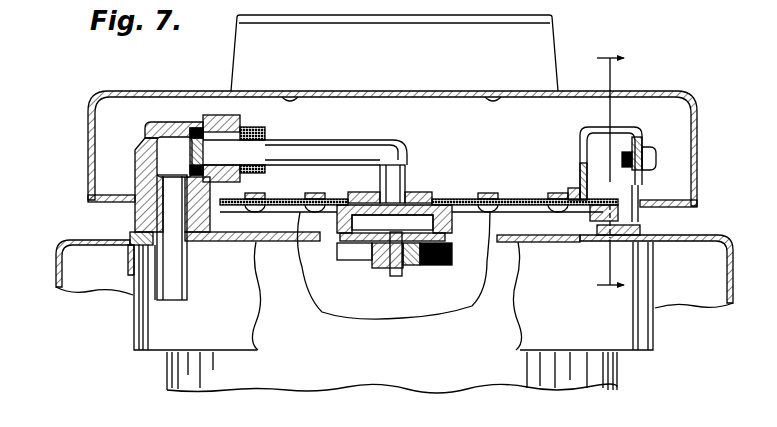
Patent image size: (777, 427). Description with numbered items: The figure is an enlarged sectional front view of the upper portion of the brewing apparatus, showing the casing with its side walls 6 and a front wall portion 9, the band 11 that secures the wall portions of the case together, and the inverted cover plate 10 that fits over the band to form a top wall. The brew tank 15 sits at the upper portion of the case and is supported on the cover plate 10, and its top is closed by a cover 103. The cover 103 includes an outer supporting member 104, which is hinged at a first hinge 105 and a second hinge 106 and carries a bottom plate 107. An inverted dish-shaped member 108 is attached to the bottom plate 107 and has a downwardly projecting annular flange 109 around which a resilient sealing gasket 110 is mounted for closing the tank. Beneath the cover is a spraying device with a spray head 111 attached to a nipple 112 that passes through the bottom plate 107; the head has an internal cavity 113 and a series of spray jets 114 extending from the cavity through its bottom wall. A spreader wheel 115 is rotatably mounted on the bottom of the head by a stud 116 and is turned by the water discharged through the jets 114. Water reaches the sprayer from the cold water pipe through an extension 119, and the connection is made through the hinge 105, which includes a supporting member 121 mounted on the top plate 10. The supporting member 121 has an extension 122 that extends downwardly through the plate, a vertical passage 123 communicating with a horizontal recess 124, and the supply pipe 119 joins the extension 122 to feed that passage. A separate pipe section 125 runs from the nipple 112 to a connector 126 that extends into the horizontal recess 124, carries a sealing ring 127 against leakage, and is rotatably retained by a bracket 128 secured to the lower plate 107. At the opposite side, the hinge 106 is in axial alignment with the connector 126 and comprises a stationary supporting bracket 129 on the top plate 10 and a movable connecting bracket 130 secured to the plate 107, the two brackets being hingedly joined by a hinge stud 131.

The side walls 6 is at (56, 280).
The front wall portion 9 is at (602, 171).
The inverted cover plate 10 is at (130, 266).
The band 11 is at (136, 331).
The brew tank 15 is at (170, 376).
The cover 103 is at (336, 92).
The outer supporting member 104 is at (91, 163).
The hinge 105 is at (144, 133).
The hinge 106 is at (662, 163).
The bottom plate 107 is at (692, 210).
The inverted dish-shaped member 108 is at (465, 198).
The annular flange 109 is at (594, 240).
The resilient sealing gasket 110 is at (617, 213).
The spray head 111 is at (345, 222).
The nipple 112 is at (408, 188).
The cavity 113 is at (440, 232).
The spray jets 114 is at (358, 260).
The wheel 115 is at (442, 264).
The stud 116 is at (391, 274).
The extension 119 is at (189, 296).
The supporting member 121 is at (135, 218).
The extension 122 is at (203, 243).
The vertical passage 123 is at (160, 190).
The horizontal recess 124 is at (195, 127).
The pipe section 125 is at (337, 139).
The connector 126 is at (252, 130).
The sealing ring 127 is at (214, 126).
The bracket 128 is at (228, 190).
The stationary supporting bracket 129 is at (640, 197).
The movable connecting bracket 130 is at (580, 155).
The hinge stud 131 is at (650, 150).